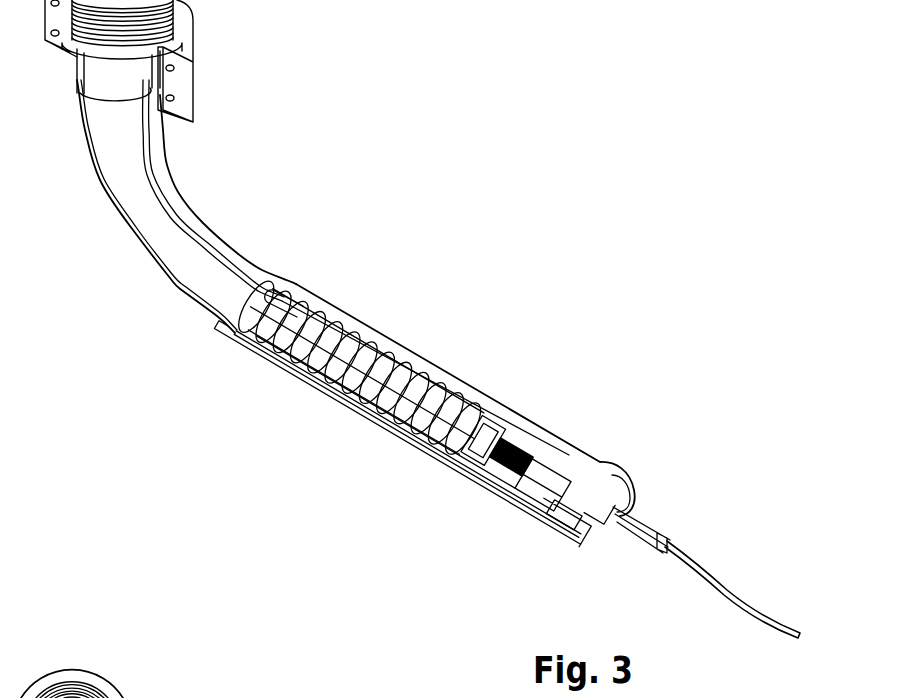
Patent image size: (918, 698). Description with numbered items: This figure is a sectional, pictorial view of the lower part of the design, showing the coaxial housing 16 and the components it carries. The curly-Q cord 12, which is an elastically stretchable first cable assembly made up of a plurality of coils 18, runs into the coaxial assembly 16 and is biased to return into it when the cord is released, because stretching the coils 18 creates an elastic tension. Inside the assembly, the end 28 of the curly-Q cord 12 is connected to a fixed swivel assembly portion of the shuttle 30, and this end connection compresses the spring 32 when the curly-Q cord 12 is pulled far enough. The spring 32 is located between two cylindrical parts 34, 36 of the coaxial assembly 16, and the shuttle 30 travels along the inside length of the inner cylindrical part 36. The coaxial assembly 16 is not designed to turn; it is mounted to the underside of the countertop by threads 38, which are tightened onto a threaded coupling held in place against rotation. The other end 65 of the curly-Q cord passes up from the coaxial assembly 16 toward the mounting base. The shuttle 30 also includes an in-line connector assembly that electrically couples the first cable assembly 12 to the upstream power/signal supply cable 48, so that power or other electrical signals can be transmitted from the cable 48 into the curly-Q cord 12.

The curly-Q cord 12 is at (240, 332).
The coaxial housing 16 is at (444, 351).
The coils 18 is at (345, 398).
The end of the curly-Q cord 28 is at (500, 490).
The shuttle 30 is at (517, 503).
The spring 32 is at (380, 420).
The outer cylindrical part 34 is at (565, 443).
The inner cylindrical part 36 is at (493, 427).
The threads 38 is at (43, 693).
The upstream power/signal supply cable 48 is at (728, 585).
The end of the curly-Q cord 65 is at (130, 697).